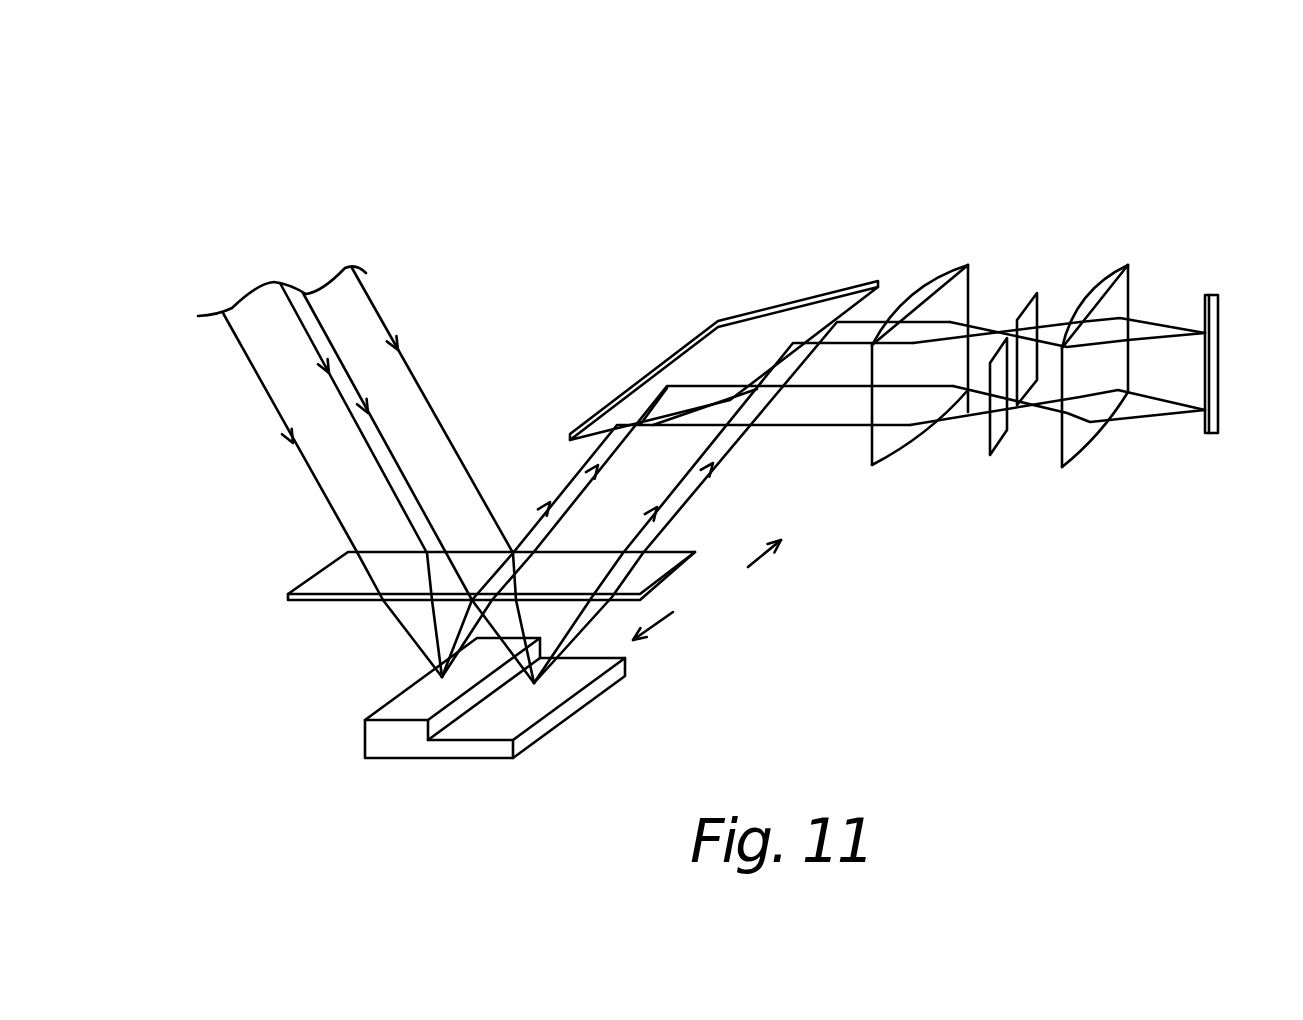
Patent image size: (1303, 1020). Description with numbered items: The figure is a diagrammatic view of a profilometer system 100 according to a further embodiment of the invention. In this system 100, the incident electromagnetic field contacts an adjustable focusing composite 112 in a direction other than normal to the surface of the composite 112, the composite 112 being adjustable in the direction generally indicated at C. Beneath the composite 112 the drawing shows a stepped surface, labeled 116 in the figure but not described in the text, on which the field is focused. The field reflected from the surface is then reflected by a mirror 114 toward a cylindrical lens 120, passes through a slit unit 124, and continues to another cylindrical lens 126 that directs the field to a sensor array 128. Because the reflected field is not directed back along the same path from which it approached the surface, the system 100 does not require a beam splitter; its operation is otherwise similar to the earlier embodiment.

The profilometer system 100 is at (712, 110).
The adjustable focusing composite 112 is at (320, 576).
The mirror 114 is at (750, 320).
The sample / stepped substrate 116 is at (380, 744).
The cylindrical lens 120 is at (884, 455).
The slit unit 124 is at (1040, 293).
The cylindrical lens 126 is at (1128, 270).
The sensor array 128 is at (1218, 308).